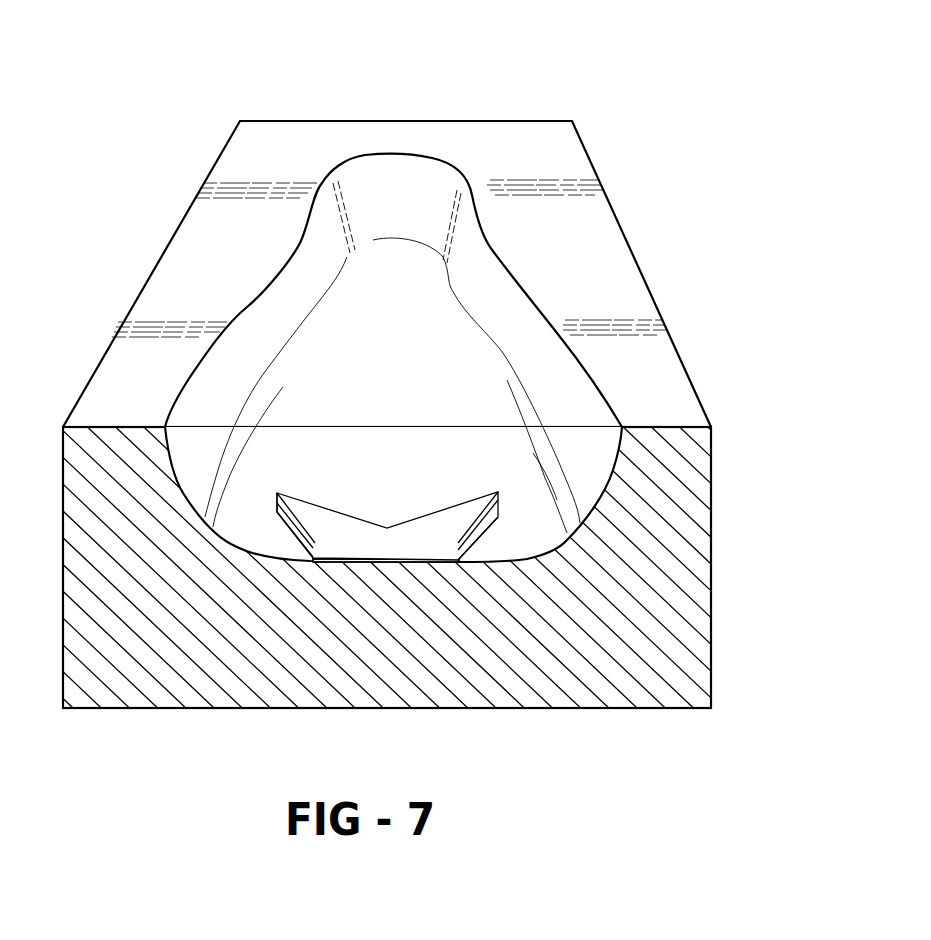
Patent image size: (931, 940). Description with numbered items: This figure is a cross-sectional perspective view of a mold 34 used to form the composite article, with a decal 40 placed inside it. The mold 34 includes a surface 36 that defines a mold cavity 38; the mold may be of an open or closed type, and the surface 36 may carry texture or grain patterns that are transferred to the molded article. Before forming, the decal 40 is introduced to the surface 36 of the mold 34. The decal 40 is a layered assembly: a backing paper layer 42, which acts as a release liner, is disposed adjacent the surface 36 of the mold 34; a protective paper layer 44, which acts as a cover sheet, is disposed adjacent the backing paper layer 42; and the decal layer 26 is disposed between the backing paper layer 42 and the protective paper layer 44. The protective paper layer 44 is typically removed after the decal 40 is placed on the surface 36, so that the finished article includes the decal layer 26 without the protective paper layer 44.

The decal layer 26 is at (402, 553).
The mold 34 is at (660, 693).
The surface 36 is at (563, 157).
The mold cavity 38 is at (240, 342).
The decal 40 is at (426, 510).
The backing paper layer 42 is at (315, 562).
The protective paper layer 44 is at (297, 507).